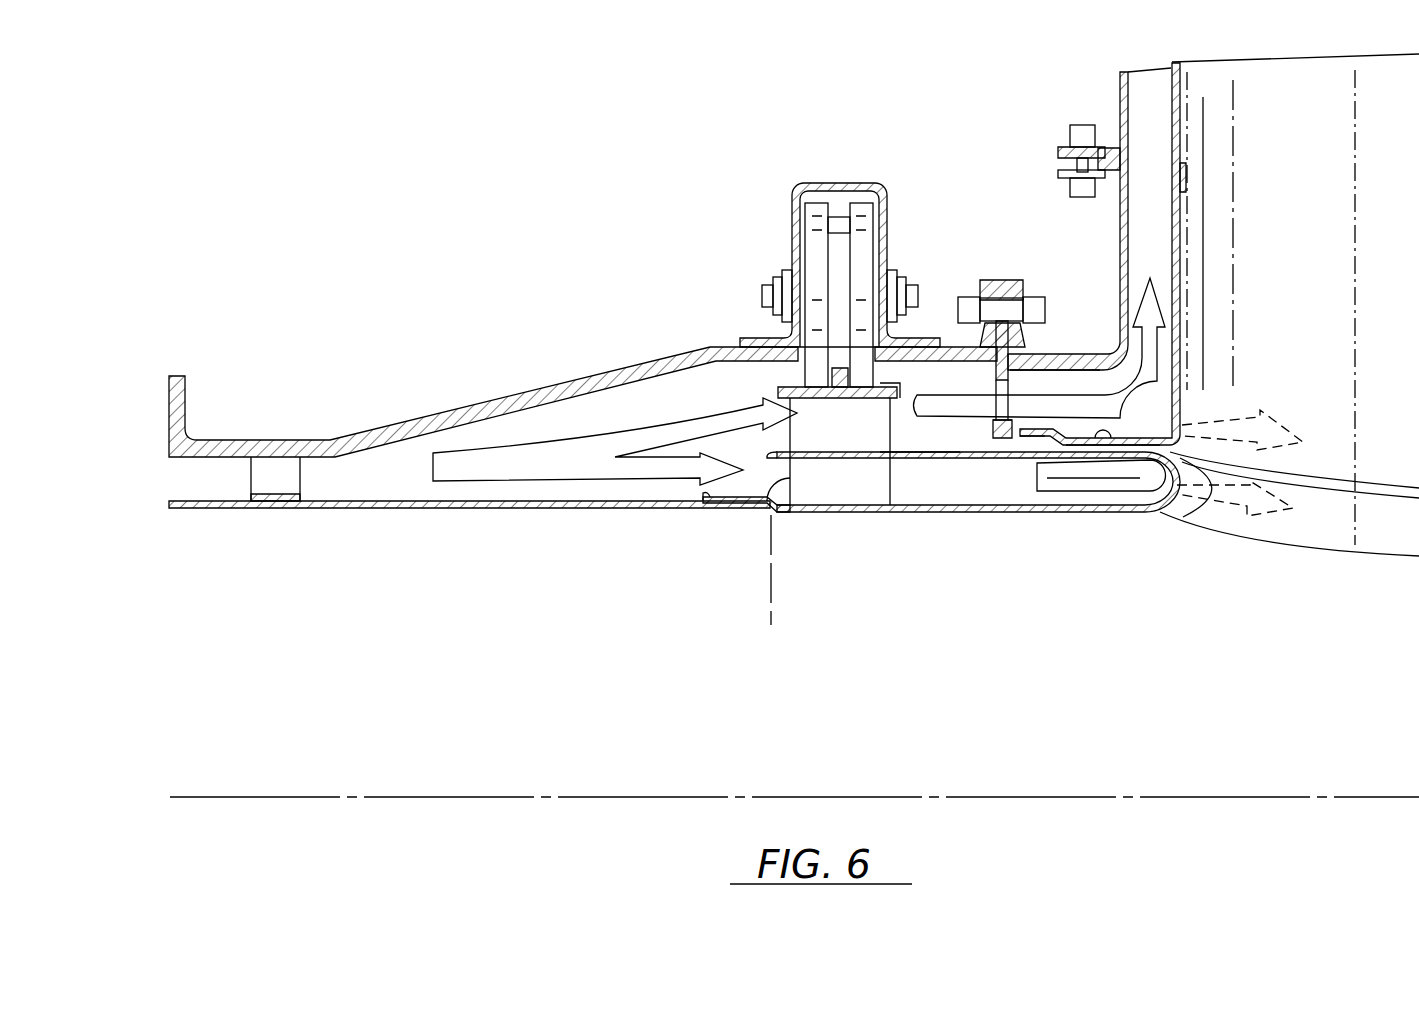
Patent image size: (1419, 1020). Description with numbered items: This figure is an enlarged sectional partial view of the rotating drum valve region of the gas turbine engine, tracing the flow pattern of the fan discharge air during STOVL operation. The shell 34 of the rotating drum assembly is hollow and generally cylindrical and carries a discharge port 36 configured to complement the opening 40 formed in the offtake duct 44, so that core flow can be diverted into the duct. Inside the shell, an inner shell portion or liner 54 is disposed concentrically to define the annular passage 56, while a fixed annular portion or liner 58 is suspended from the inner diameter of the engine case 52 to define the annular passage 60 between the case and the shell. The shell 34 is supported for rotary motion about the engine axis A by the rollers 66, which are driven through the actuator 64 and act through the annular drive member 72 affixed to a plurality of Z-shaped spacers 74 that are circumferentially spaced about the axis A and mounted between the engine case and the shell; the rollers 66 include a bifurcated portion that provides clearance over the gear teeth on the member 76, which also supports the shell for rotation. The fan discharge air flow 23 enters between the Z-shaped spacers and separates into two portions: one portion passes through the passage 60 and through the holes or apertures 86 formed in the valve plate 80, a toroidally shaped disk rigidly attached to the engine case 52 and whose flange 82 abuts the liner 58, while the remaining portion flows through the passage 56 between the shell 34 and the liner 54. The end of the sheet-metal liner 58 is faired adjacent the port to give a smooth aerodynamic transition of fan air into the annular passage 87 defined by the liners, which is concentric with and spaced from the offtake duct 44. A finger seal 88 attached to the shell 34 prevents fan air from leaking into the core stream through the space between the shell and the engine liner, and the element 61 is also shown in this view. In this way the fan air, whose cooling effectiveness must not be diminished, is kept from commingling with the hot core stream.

The engine axis A is at (460, 797).
The fan discharge air flow 23 is at (547, 463).
The shell 34 is at (918, 455).
The discharge port 36 is at (1166, 528).
The opening 40 is at (1190, 415).
The offtake duct 44 is at (1120, 103).
The engine case 52 is at (583, 377).
The inner shell portion or liner 54 is at (890, 507).
The annular passage 56 is at (925, 572).
The fixed annular portion or liner 58 is at (1111, 440).
The annular passage 60 is at (1097, 378).
The seal box 61 is at (1033, 493).
The actuator 64 is at (830, 183).
The rollers 66 is at (868, 243).
The annular drive member 72 is at (890, 378).
The Z-shaped spacers 74 is at (770, 507).
The member with gear teeth 76 is at (790, 390).
The valve plate 80 is at (1027, 350).
The flange 82 is at (1020, 441).
The holes or apertures 86 is at (997, 420).
The annular passage 87 is at (1140, 207).
The finger seal 88 is at (1182, 187).